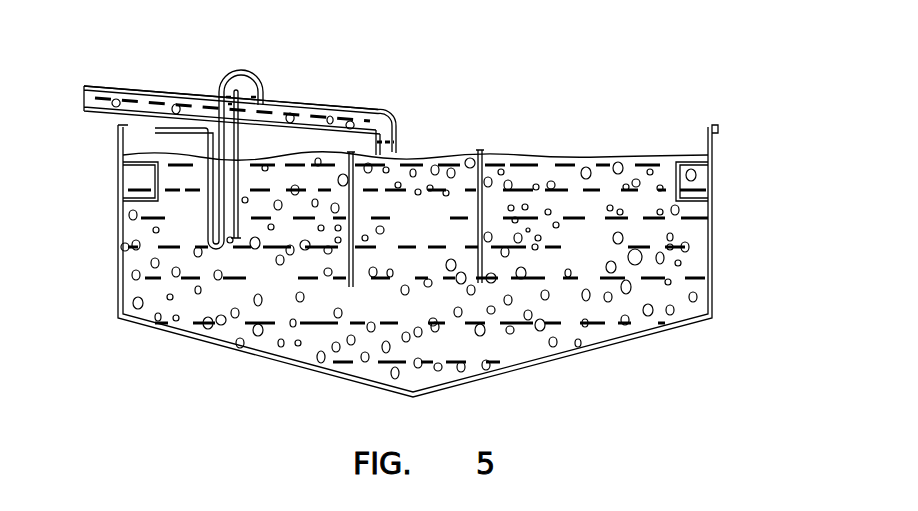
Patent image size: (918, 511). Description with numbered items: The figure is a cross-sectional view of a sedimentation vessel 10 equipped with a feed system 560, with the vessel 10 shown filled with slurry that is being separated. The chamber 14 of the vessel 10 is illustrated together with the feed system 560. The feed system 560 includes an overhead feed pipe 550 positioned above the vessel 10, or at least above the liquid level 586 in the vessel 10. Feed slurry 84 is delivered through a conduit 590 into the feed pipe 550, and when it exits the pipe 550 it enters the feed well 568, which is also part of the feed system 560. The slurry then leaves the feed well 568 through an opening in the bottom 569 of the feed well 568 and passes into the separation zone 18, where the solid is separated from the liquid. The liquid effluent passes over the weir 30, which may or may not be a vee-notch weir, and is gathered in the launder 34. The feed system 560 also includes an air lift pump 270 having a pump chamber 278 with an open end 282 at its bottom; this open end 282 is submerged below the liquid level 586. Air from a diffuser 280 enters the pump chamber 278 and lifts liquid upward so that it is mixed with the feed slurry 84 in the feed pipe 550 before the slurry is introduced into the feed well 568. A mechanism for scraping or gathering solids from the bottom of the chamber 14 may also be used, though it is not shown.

The sedimentation vessel 10 is at (595, 352).
The chamber 14 is at (511, 238).
The separation zone 18 is at (600, 247).
The weir 30 is at (157, 192).
The launder 34 is at (138, 180).
The feed slurry 84 is at (394, 150).
The air lift pump 270 is at (218, 64).
The pump chamber 278 is at (240, 148).
The diffuser 280 is at (168, 127).
The open end 282 is at (231, 246).
The overhead feed pipe 550 is at (348, 112).
The feed system 560 is at (399, 120).
The feed well 568 is at (441, 228).
The bottom 569 is at (353, 287).
The liquid level 586 is at (150, 153).
The conduit 590 is at (232, 98).